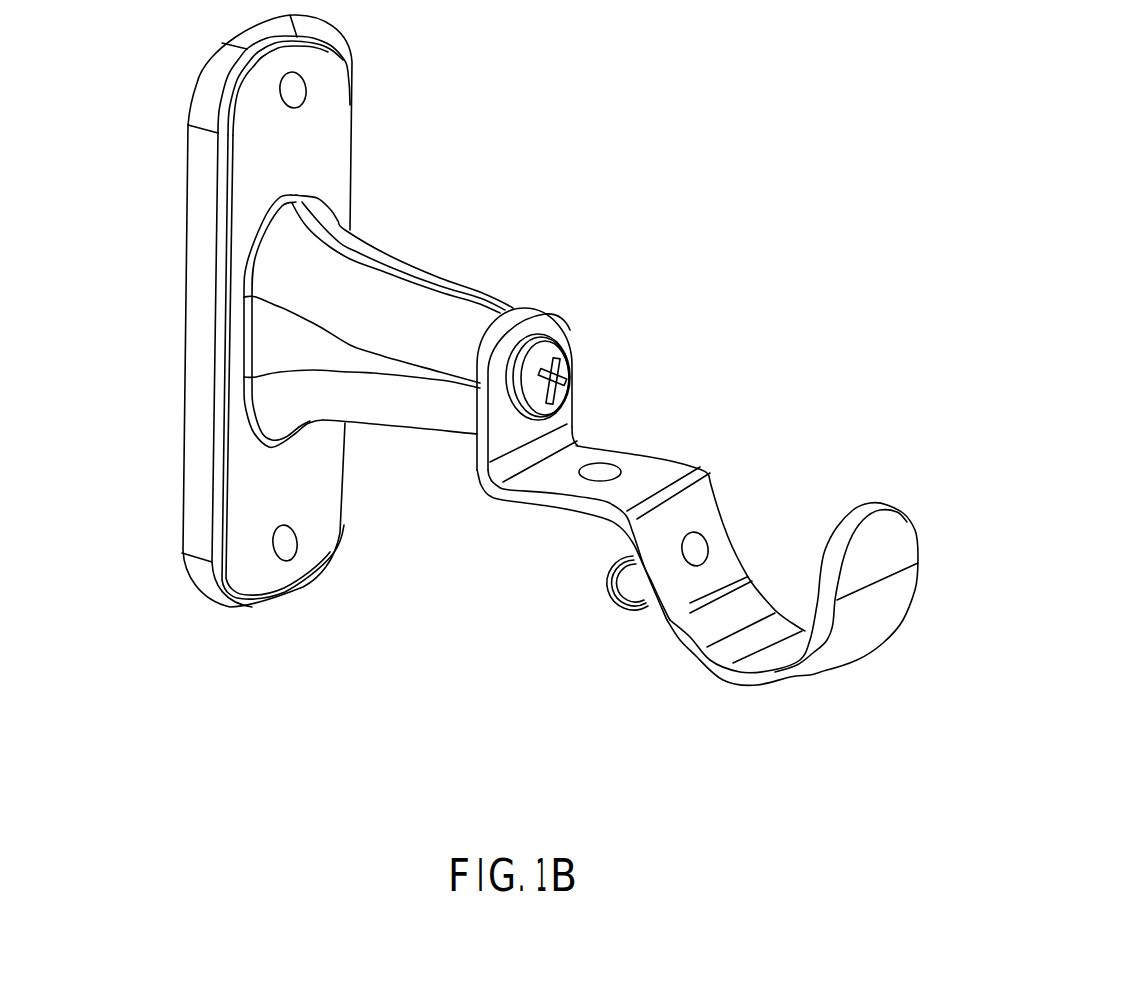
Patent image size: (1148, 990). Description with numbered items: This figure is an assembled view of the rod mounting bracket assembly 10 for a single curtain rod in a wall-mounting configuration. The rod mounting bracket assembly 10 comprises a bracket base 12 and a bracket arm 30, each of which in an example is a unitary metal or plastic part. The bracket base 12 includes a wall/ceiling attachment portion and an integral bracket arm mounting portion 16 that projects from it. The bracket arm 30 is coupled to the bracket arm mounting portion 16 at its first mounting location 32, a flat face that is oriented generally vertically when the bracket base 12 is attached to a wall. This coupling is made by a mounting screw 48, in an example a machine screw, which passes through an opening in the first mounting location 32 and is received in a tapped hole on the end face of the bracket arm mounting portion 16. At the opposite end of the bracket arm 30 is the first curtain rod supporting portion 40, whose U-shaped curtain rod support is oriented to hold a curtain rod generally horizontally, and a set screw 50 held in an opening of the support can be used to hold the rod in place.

The rod mounting bracket assembly 10 is at (348, 666).
The bracket base 12 is at (150, 240).
The bracket arm mounting portion 16 is at (377, 314).
The bracket arm 30 is at (776, 377).
The first mounting location 32 is at (538, 320).
The first curtain rod supporting portion 40 is at (731, 722).
The mounting screw 48 is at (555, 347).
The set screw 50 is at (616, 599).